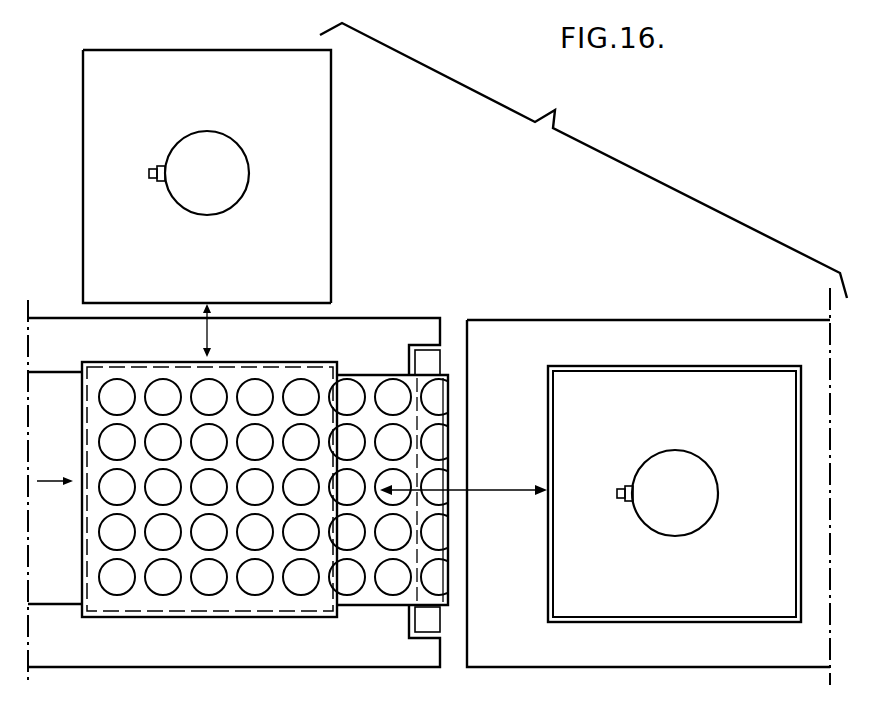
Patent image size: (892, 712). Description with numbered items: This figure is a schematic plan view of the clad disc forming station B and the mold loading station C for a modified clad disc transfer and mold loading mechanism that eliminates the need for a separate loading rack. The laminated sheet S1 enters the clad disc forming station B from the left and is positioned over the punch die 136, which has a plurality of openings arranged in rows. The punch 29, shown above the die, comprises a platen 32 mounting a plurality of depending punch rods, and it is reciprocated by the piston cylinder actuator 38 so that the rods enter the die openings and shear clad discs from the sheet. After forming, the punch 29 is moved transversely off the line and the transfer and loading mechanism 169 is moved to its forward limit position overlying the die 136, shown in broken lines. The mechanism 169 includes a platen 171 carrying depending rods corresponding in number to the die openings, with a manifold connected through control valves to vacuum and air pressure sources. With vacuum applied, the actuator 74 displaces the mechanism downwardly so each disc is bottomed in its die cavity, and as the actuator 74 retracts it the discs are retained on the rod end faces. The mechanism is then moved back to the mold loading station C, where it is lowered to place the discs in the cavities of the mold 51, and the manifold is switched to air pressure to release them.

The punch 29 is at (325, 155).
The platen 32 is at (96, 150).
The piston cylinder actuator 38 is at (220, 143).
The forming and transfer station B is at (350, 317).
The mold loading station C is at (585, 630).
The laminated sheet S1 is at (37, 393).
The punch die 136 is at (142, 362).
The clad disc transfer and loading mechanism 169 is at (163, 616).
The platen 171 is at (635, 383).
The mold 51 is at (740, 627).
The actuator 74 is at (698, 472).